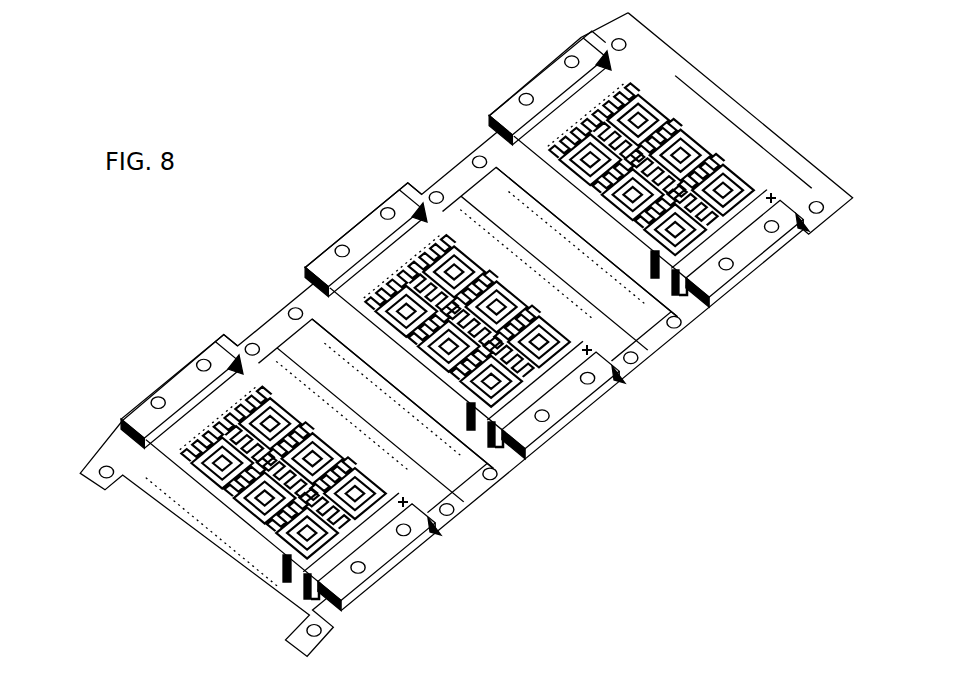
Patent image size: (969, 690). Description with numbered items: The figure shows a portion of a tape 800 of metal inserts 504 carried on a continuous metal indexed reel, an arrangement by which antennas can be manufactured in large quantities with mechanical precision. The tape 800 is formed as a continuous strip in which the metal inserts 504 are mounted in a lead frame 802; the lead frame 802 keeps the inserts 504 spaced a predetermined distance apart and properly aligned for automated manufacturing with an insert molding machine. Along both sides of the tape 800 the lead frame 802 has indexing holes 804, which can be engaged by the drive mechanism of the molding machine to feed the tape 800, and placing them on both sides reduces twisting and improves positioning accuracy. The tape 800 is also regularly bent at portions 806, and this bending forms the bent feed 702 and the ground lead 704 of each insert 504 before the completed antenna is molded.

The tape 800 is at (821, 436).
The lead frame 802 is at (467, 167).
The indexing holes 804 is at (567, 58).
The portions 806 is at (320, 278).
The metal insert 504 is at (740, 192).
The bent feed 702 is at (499, 442).
The ground lead 704 is at (472, 428).